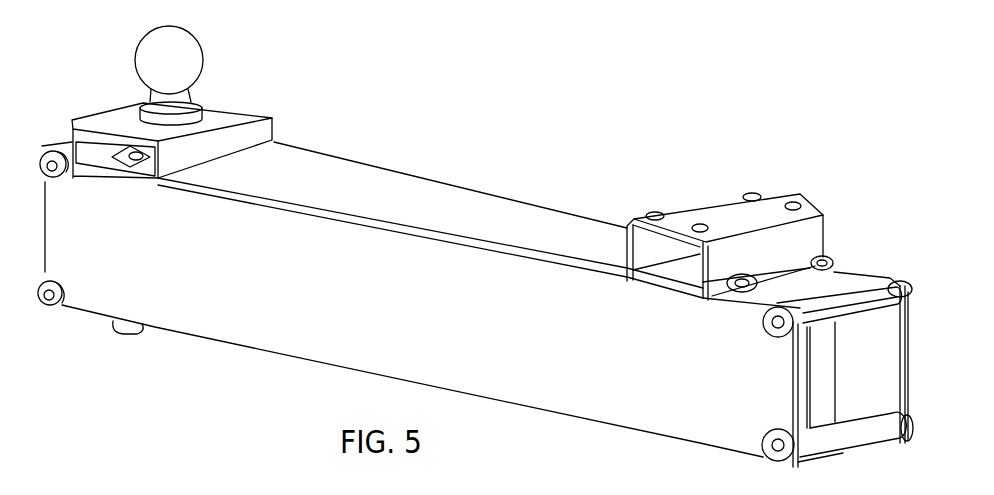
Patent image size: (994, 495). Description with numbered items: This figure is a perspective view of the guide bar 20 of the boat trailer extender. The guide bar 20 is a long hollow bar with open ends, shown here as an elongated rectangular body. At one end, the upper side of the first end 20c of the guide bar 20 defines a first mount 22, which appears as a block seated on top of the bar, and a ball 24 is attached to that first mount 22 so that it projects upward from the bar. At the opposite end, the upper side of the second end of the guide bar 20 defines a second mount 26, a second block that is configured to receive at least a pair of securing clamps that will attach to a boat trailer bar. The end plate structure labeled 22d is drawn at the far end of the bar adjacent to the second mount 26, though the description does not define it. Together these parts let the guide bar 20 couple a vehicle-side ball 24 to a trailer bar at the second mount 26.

The guide bar 20 is at (512, 123).
The first end of the guide bar 20c is at (452, 206).
The first mount 22 is at (273, 142).
The end plate 22d is at (680, 273).
The ball 24 is at (190, 62).
The second mount 26 is at (757, 212).